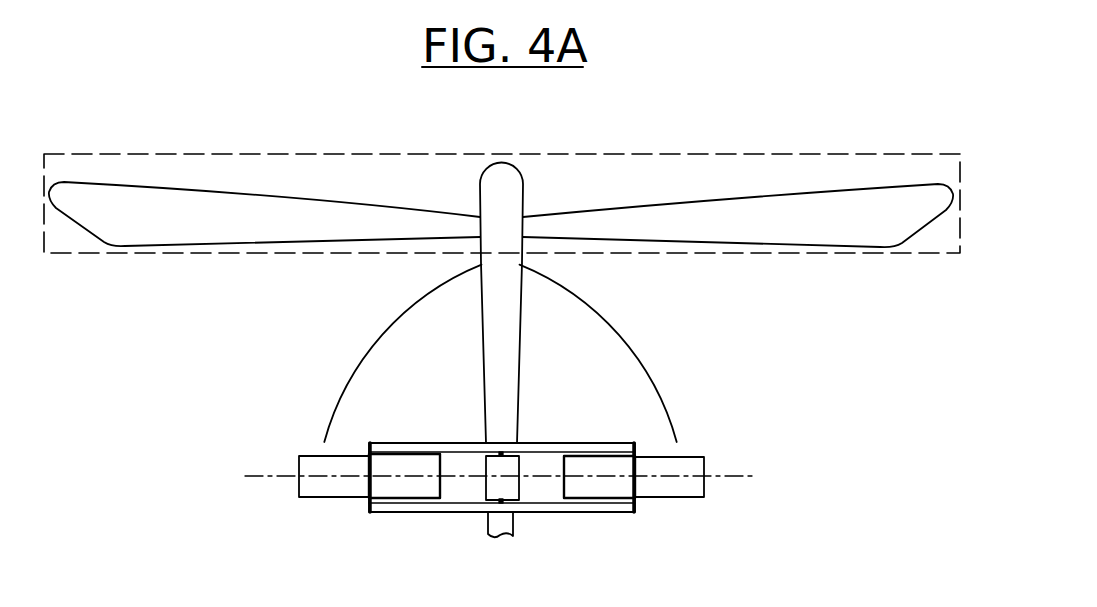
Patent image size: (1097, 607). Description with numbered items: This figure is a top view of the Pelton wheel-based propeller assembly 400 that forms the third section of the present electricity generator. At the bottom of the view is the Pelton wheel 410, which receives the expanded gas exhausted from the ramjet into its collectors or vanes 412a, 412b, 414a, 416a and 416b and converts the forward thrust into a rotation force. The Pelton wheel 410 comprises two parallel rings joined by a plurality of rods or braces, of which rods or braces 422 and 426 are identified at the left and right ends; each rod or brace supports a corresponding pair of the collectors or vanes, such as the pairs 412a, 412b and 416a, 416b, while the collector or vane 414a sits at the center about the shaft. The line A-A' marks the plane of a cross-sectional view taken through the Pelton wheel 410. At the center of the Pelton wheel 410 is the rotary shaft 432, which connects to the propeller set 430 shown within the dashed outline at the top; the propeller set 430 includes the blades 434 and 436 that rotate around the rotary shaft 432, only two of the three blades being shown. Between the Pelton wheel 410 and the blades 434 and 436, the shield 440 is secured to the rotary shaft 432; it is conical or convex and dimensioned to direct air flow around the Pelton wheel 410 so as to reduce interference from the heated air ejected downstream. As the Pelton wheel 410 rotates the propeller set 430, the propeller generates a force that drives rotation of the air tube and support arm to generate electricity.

The rotorcraft device 400 is at (584, 126).
The Pelton wheel 410 is at (606, 513).
The collector or vane 412a is at (337, 498).
The collector or vane 412b is at (413, 498).
The collector or vane 414a is at (485, 488).
The collector or vane 416a is at (692, 498).
The collector or vane 416b is at (563, 488).
The rod or brace 422 is at (366, 446).
The rod or brace 426 is at (642, 446).
The propeller set 430 is at (477, 153).
The rotary shaft 432 is at (477, 195).
The blade 434 is at (196, 231).
The blade 436 is at (876, 231).
The shield 440 is at (638, 348).